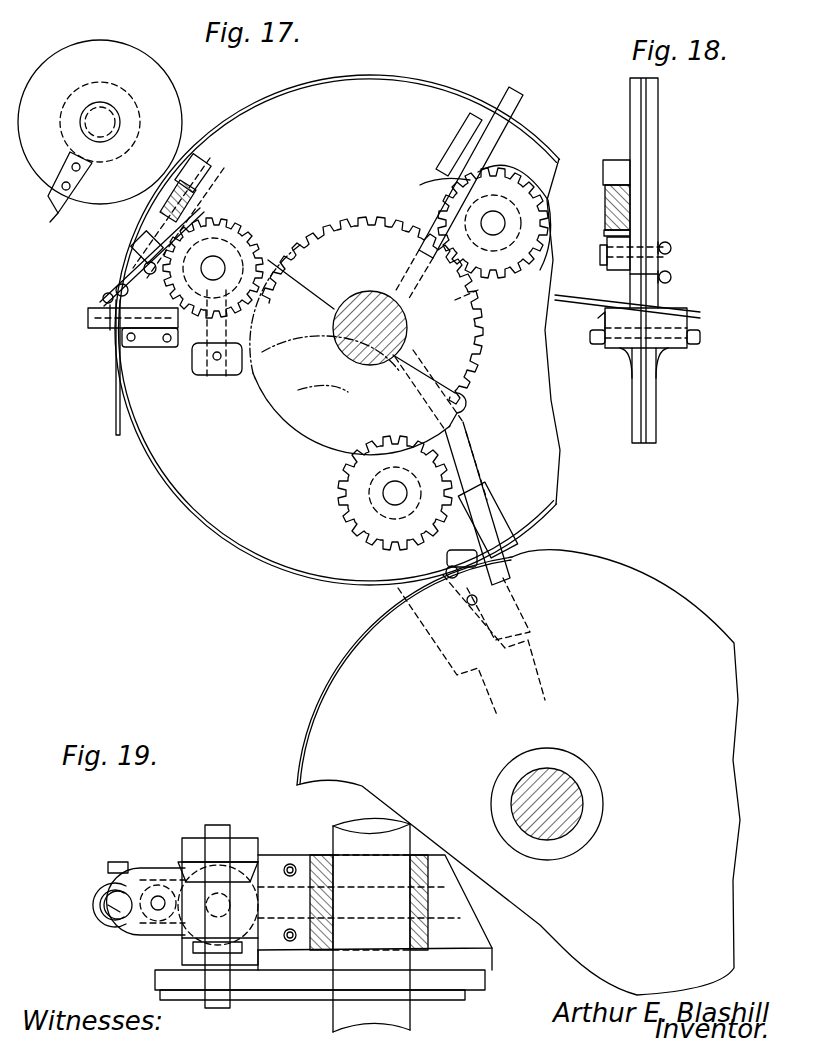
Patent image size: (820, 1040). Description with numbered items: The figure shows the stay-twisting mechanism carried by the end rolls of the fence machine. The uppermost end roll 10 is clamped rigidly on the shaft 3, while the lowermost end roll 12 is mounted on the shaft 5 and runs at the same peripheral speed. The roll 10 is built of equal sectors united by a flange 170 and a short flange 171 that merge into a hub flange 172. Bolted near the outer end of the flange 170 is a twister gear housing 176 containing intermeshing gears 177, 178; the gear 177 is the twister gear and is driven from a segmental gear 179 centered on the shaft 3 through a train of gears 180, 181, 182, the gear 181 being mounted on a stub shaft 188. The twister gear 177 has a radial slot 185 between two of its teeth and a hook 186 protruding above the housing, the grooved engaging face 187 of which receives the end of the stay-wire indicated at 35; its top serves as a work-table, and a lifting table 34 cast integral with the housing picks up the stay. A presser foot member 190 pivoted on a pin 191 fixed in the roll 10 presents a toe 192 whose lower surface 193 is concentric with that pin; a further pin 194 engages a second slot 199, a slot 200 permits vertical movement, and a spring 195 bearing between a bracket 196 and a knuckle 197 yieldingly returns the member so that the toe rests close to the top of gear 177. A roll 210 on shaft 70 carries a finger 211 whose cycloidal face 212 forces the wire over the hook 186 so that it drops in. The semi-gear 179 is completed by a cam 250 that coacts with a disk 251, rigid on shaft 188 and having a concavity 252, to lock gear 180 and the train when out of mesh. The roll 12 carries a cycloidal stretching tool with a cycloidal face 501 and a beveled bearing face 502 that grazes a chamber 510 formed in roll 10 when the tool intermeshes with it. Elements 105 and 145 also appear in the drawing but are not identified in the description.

In FIG. 17, the shaft 3 is at (405, 320).
In FIG. 19, the shaft 3 is at (371, 925).
In FIG. 17, the shaft 5 is at (567, 784).
In FIG. 17, the uppermost end roll 10 is at (337, 330).
In FIG. 18, the uppermost end roll 10 is at (656, 136).
In FIG. 17, the lowermost end roll 12 is at (518, 772).
In FIG. 17, the lifting table 34 is at (95, 295).
In FIG. 18, the lifting table 34 is at (605, 296).
In FIG. 19, the lifting table 34 is at (108, 864).
In FIG. 17, the stay-wire end 35 is at (112, 290).
In FIG. 18, the stay-wire end 35 is at (688, 310).
In FIG. 17, the shaft 70 is at (100, 122).
In FIG. 17, the rod 105 is at (110, 430).
In FIG. 17, the arm 145 is at (135, 213).
In FIG. 17, the flange 170 is at (300, 367).
In FIG. 17, the short flange 171 is at (222, 360).
In FIG. 17, the hub flange 172 is at (345, 380).
In FIG. 19, the hub flange 172 is at (284, 855).
In FIG. 17, the twister gear housing 176 is at (150, 348).
In FIG. 18, the twister gear housing 176 is at (690, 320).
In FIG. 17, the twister gear 177 is at (108, 330).
In FIG. 19, the twister gear 177 is at (125, 864).
In FIG. 17, the gear 178 is at (118, 378).
In FIG. 19, the gear 178 is at (157, 868).
In FIG. 17, the segmental gear 179 is at (468, 328).
In FIG. 19, the segmental gear 179 is at (436, 985).
In FIG. 17, the gear 180 is at (510, 190).
In FIG. 19, the gear 180 is at (170, 978).
In FIG. 19, the gear 181 is at (200, 860).
In FIG. 17, the gear 182 is at (300, 290).
In FIG. 19, the gear 182 is at (256, 860).
In FIG. 19, the radial slot 185 is at (100, 900).
In FIG. 17, the hook 186 is at (115, 290).
In FIG. 18, the hook 186 is at (672, 280).
In FIG. 19, the hook 186 is at (108, 912).
In FIG. 17, the engaging face 187 is at (90, 312).
In FIG. 17, the stub shaft 188 is at (212, 378).
In FIG. 19, the stub shaft 188 is at (228, 1005).
In FIG. 17, the presser foot member 190 is at (135, 247).
In FIG. 18, the presser foot member 190 is at (612, 265).
In FIG. 17, the pin 191 is at (140, 258).
In FIG. 18, the pin 191 is at (672, 246).
In FIG. 17, the toe 192 is at (103, 294).
In FIG. 18, the toe 192 is at (600, 322).
In FIG. 17, the lower surface 193 is at (115, 355).
In FIG. 17, the pin 194 is at (213, 268).
In FIG. 18, the pin 194 is at (672, 262).
In FIG. 17, the spring 195 is at (200, 210).
In FIG. 18, the spring 195 is at (605, 208).
In FIG. 17, the bracket 196 is at (205, 180).
In FIG. 18, the bracket 196 is at (610, 170).
In FIG. 17, the knuckle 197 is at (212, 200).
In FIG. 18, the knuckle 197 is at (604, 232).
In FIG. 17, the second slot 199 is at (303, 232).
In FIG. 17, the slot 200 is at (160, 205).
In FIG. 17, the roll 210 is at (100, 122).
In FIG. 17, the finger 211 is at (50, 193).
In FIG. 17, the cycloidal face 212 is at (52, 216).
In FIG. 17, the cam 250 is at (278, 392).
In FIG. 17, the disk 251 is at (195, 385).
In FIG. 17, the concavity 252 is at (470, 184).
In FIG. 17, the cycloidal face 501 is at (505, 525).
In FIG. 17, the beveled bearing face 502 is at (445, 572).
In FIG. 17, the chamber 510 is at (479, 466).